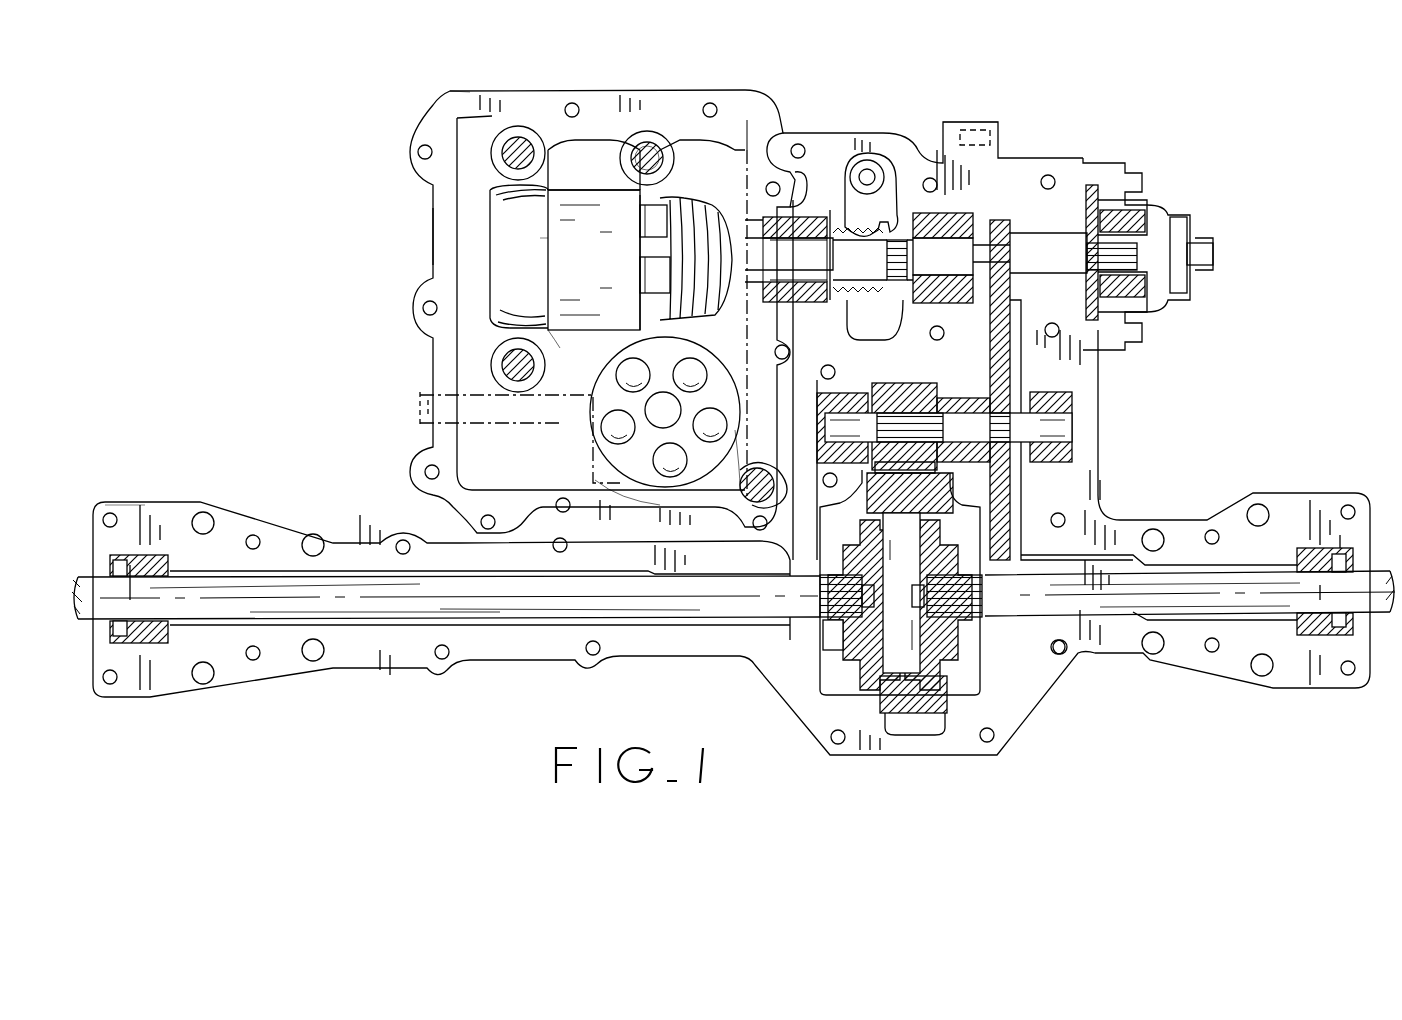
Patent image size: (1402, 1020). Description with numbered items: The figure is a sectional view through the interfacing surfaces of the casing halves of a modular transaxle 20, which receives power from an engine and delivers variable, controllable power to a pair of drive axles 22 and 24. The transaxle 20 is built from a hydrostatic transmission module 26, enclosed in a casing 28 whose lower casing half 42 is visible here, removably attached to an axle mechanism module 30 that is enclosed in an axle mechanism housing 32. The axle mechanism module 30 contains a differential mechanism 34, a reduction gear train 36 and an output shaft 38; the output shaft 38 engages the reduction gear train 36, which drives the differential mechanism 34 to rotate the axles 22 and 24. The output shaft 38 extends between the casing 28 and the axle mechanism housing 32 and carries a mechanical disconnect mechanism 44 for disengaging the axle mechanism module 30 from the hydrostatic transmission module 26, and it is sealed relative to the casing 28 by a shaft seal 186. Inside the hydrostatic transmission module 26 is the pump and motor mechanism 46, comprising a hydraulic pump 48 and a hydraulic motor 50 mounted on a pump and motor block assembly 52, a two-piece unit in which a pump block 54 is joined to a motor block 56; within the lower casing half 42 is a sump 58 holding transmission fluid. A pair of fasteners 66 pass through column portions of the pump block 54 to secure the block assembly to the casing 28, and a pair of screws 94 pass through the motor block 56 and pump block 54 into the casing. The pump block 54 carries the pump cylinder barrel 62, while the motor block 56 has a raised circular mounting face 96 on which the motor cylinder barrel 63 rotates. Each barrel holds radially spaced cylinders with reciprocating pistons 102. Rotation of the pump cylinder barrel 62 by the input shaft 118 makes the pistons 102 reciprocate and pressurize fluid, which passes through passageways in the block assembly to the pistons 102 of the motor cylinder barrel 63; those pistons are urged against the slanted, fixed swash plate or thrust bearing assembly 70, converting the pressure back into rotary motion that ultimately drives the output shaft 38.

The transaxle 20 is at (678, 672).
The drive axle 22 is at (195, 615).
The drive axle 24 is at (1243, 600).
The hydrostatic transmission module 26 is at (638, 70).
The casing 28 is at (690, 128).
The axle mechanism module 30 is at (922, 98).
The axle mechanism housing 32 is at (850, 130).
The differential mechanism 34 is at (1007, 652).
The reduction gear train 36 is at (1052, 380).
The output shaft 38 is at (958, 247).
The lower casing half 42 is at (433, 208).
The mechanical disconnect mechanism 44 is at (900, 194).
The pump and motor mechanism 46 is at (708, 162).
The hydraulic pump 48 is at (634, 493).
The hydraulic motor 50 is at (568, 172).
The pump and motor block assembly 52 is at (520, 343).
The pump block 54 is at (640, 190).
The motor block 56 is at (497, 255).
The sump 58 is at (470, 120).
The pump cylinder barrel 62 is at (700, 470).
The motor cylinder barrel 63 is at (597, 190).
The fastener 66 is at (646, 140).
The fixed swash plate or thrust bearing assembly 70 is at (712, 225).
The screw 94 is at (508, 150).
The raised circular mounting face 96 is at (552, 238).
The piston 102 is at (650, 268).
The input shaft 118 is at (655, 408).
The shaft seal 186 is at (790, 298).